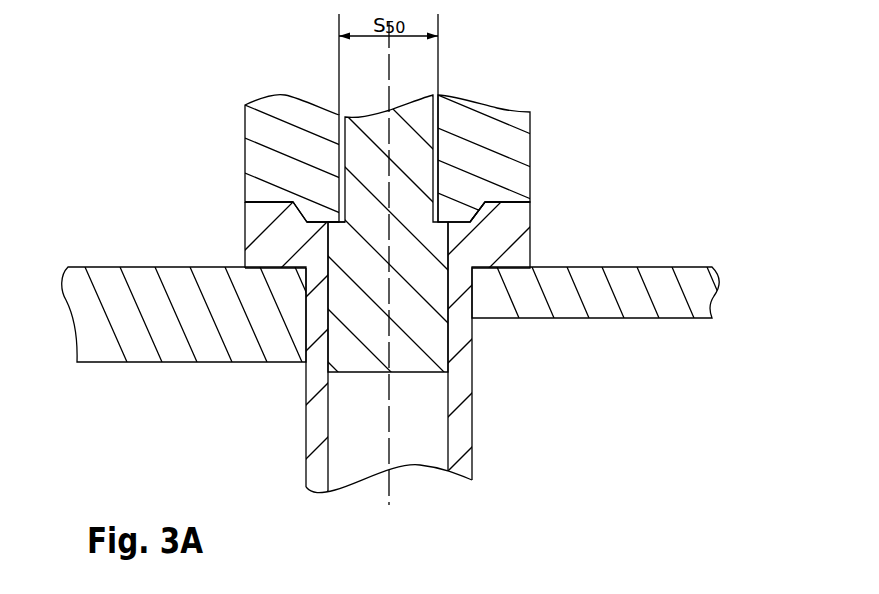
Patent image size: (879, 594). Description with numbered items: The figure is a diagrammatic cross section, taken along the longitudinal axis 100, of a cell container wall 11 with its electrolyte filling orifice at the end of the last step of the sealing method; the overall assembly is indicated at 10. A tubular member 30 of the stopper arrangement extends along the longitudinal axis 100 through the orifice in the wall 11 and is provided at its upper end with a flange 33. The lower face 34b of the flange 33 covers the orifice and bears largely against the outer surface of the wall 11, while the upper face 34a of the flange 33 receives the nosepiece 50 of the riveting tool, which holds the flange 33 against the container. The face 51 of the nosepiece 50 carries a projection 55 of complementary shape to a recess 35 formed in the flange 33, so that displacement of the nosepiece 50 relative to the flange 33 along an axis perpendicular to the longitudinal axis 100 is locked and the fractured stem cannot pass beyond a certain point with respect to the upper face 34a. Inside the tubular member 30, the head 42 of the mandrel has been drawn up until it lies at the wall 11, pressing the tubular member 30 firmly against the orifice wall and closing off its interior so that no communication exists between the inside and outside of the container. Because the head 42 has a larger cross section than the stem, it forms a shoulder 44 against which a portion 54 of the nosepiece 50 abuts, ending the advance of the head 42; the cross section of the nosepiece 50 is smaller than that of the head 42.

The fastening assembly 10 is at (229, 453).
The wall 11 is at (106, 360).
The tubular member 30 is at (460, 426).
The flange 33 is at (510, 258).
The upper face of the flange 34a is at (273, 202).
The lower face of the flange 34b is at (318, 236).
The recess 35 is at (485, 205).
The head 42 is at (415, 357).
The shoulder 44 is at (335, 224).
The nosepiece 50 is at (495, 158).
The face of the nosepiece 51 is at (512, 200).
The portion of the nosepiece 54 is at (331, 222).
The projection 55 is at (454, 212).
The longitudinal axis 100 is at (390, 68).